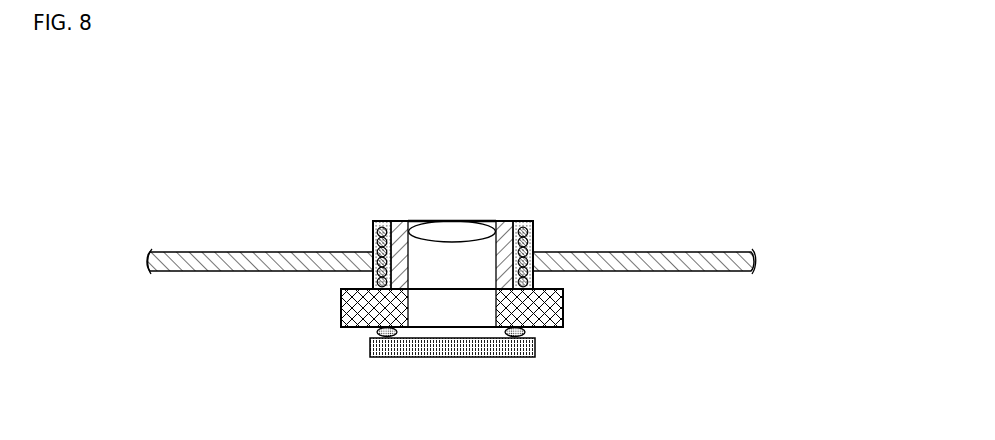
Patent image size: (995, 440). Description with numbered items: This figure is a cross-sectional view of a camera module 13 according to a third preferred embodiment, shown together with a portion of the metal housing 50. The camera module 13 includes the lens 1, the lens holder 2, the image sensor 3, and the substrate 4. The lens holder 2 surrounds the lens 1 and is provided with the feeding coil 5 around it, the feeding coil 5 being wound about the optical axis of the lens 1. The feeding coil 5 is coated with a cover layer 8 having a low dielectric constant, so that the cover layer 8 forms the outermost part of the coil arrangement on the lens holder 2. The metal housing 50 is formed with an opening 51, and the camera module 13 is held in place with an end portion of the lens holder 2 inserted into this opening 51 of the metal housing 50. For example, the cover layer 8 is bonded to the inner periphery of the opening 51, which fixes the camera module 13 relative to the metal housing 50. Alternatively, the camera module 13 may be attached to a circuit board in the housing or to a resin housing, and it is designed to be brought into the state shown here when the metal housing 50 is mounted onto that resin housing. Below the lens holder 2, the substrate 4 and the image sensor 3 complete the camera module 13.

The lens 1 is at (453, 230).
The lens holder 2 is at (504, 228).
The image sensor 3 is at (452, 358).
The substrate 4 is at (557, 308).
The feeding coil 5 is at (526, 240).
The cover layer 8 is at (525, 223).
The camera module 13 is at (589, 357).
The metal housing 50 is at (638, 258).
The opening 51 is at (370, 248).